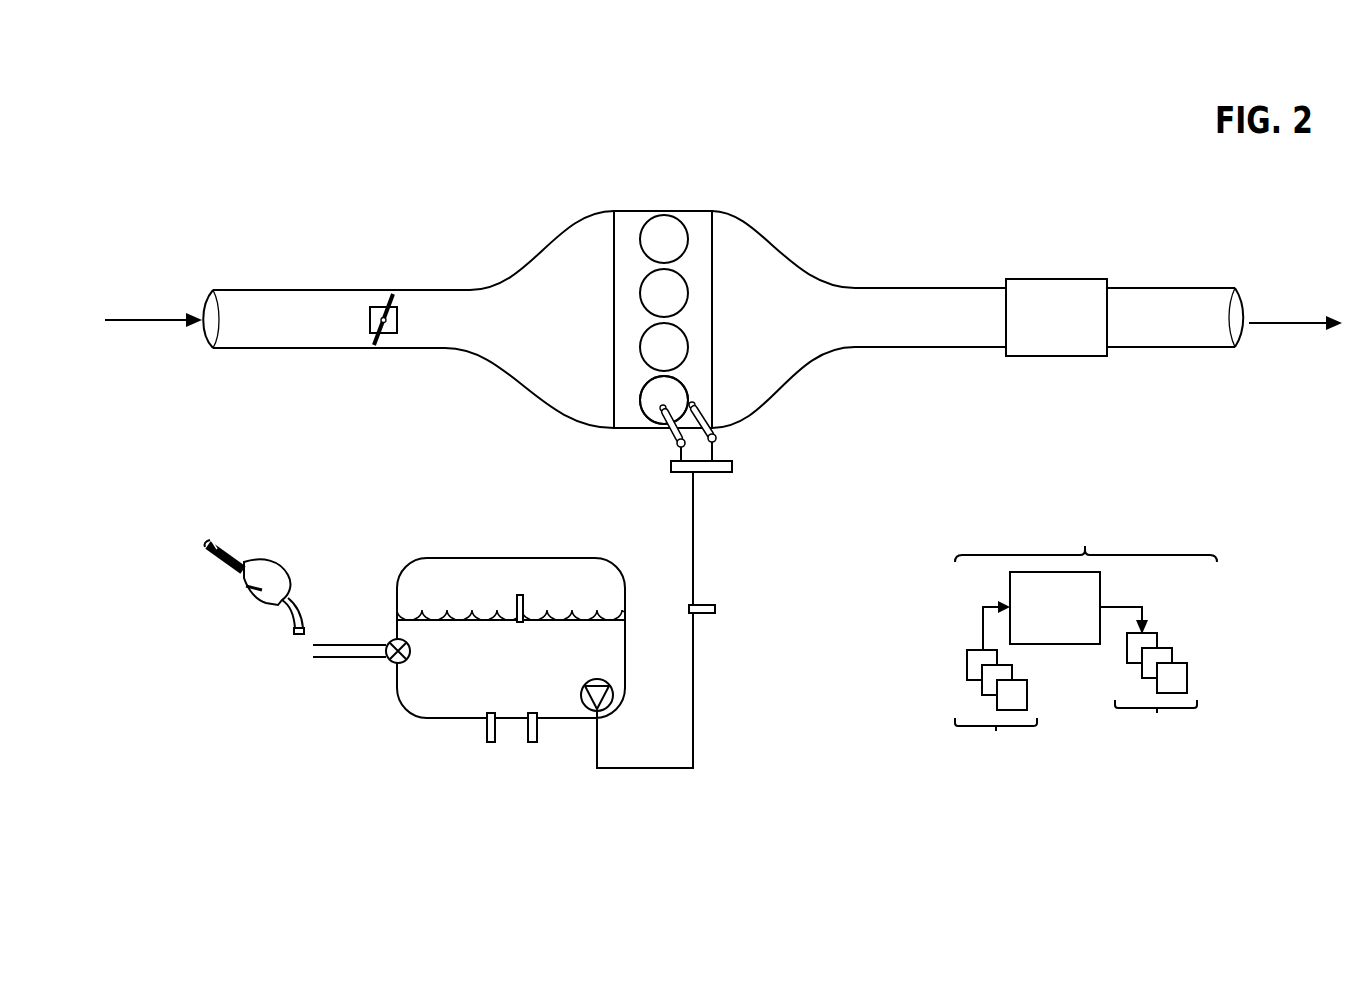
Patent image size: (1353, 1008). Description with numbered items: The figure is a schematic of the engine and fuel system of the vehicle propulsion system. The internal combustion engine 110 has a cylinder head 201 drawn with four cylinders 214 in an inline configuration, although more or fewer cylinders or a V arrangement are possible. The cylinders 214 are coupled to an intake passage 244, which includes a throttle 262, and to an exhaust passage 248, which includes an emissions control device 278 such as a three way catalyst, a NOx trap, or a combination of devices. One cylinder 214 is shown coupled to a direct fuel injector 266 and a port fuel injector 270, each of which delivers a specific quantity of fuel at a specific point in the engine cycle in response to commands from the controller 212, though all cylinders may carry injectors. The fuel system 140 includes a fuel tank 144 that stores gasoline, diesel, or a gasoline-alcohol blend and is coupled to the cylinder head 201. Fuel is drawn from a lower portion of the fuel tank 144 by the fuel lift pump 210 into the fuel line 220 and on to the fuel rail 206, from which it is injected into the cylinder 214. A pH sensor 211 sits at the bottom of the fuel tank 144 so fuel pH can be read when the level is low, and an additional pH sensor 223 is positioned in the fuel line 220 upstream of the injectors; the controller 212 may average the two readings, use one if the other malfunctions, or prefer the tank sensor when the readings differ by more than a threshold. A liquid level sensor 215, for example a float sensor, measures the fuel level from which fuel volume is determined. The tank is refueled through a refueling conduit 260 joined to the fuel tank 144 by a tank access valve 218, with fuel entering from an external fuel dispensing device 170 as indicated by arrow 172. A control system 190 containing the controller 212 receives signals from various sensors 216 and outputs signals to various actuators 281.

The engine 110 is at (841, 170).
The fuel system 140 is at (443, 500).
The fuel tank 144 is at (402, 707).
The fuel dispensing device 170 is at (287, 577).
The arrow 172 is at (300, 651).
The control system 190 is at (1086, 573).
The cylinder head 201 is at (713, 300).
The fuel rail 206 is at (722, 473).
The fuel lift pump 210 is at (585, 712).
The pH sensor 211 is at (485, 731).
The controller 212 is at (527, 737).
The cylinders 214 is at (687, 392).
The liquid level sensor 215 is at (521, 596).
The sensors 216 is at (996, 712).
The tank access valve 218 is at (385, 660).
The fuel line 220 is at (694, 680).
The pH sensor 223 is at (708, 605).
The intake passage 244 is at (340, 316).
The exhaust passage 248 is at (860, 316).
The refueling conduit 260 is at (343, 658).
The throttle 262 is at (397, 327).
The fuel injector 266 is at (716, 439).
The fuel injector 270 is at (687, 446).
The emissions control device 278 is at (1056, 317).
The actuators 281 is at (1156, 695).